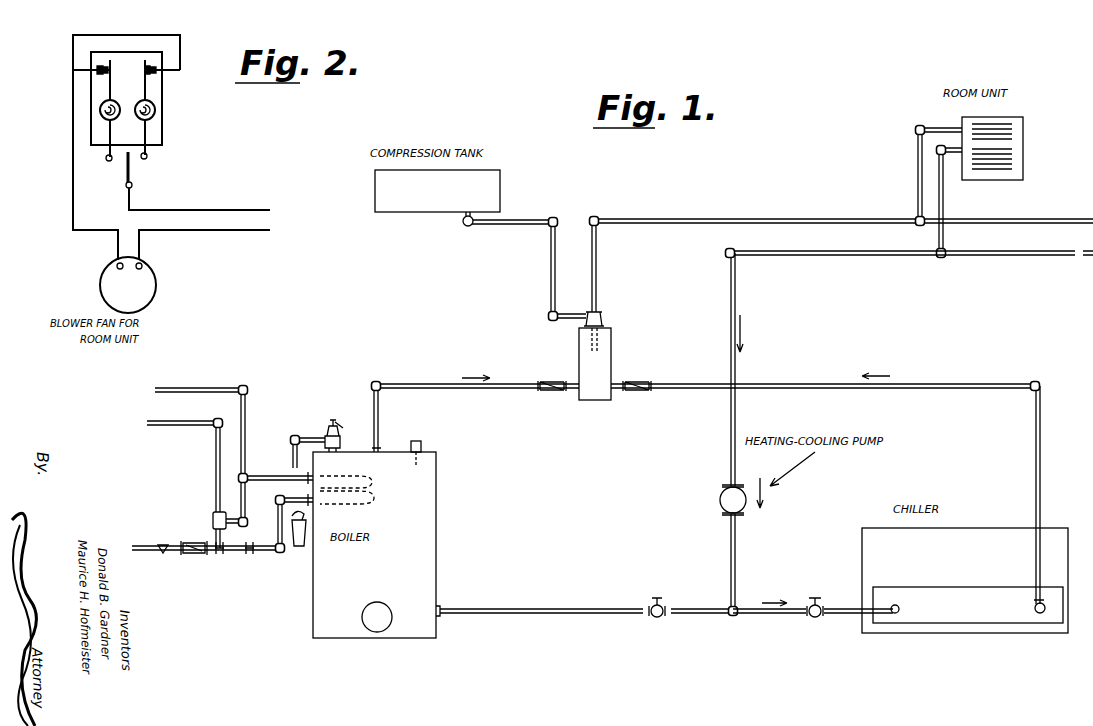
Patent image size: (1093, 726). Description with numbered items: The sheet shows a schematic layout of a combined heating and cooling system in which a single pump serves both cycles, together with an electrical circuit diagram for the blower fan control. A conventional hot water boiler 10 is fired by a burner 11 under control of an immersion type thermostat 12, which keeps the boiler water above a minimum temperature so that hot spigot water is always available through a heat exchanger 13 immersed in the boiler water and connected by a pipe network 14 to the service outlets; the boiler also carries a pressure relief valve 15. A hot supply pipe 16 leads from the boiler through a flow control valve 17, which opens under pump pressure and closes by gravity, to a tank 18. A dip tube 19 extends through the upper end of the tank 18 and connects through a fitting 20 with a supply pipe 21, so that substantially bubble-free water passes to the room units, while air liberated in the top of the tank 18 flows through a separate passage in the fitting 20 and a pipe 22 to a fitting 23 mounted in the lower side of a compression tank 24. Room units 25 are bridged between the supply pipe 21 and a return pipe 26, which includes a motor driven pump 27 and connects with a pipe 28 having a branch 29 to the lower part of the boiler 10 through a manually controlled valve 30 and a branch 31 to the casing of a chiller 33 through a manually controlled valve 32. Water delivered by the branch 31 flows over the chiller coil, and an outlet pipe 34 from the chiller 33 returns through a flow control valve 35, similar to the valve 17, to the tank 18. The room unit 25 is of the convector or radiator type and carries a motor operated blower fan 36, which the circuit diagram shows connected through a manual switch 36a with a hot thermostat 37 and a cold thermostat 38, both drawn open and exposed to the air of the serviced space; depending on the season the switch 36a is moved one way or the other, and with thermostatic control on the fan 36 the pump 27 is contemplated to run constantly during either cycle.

In FIG. 1, the hot water boiler 10 is at (426, 513).
In FIG. 1, the firing unit 11 is at (368, 627).
In FIG. 1, the immersion type thermostat 12 is at (424, 442).
In FIG. 1, the heat exchanger 13 is at (372, 496).
In FIG. 1, the pipe network 14 is at (203, 463).
In FIG. 1, the pressure relief valve 15 is at (325, 431).
In FIG. 1, the hot supply pipe 16 is at (432, 379).
In FIG. 1, the flow control valve 17 is at (548, 393).
In FIG. 1, the tank 18 is at (606, 351).
In FIG. 1, the dip tube 19 is at (590, 346).
In FIG. 1, the fitting 20 is at (605, 318).
In FIG. 1, the supply pipe 21 is at (698, 218).
In FIG. 1, the pipe 22 is at (551, 259).
In FIG. 1, the fitting 23 is at (462, 226).
In FIG. 1, the compression tank 24 is at (492, 186).
In FIG. 1, the room unit 25 is at (1024, 143).
In FIG. 1, the return pipe 26 is at (862, 254).
In FIG. 1, the motor driven pump 27 is at (720, 499).
In FIG. 1, the pipe 28 is at (689, 631).
In FIG. 1, the branch 29 is at (692, 605).
In FIG. 1, the manually controlled valve 30 is at (653, 620).
In FIG. 1, the branch 31 is at (768, 617).
In FIG. 1, the manually controlled valve 32 is at (817, 620).
In FIG. 1, the chiller 33 is at (920, 634).
In FIG. 1, the outlet pipe 34 is at (1035, 418).
In FIG. 1, the flow control valve 35 is at (639, 395).
In FIG. 2, the blower fan 36 is at (152, 278).
In FIG. 2, the manual switch 36a is at (131, 168).
In FIG. 2, the hot thermostat 37 is at (107, 88).
In FIG. 2, the cold thermostat 38 is at (148, 90).